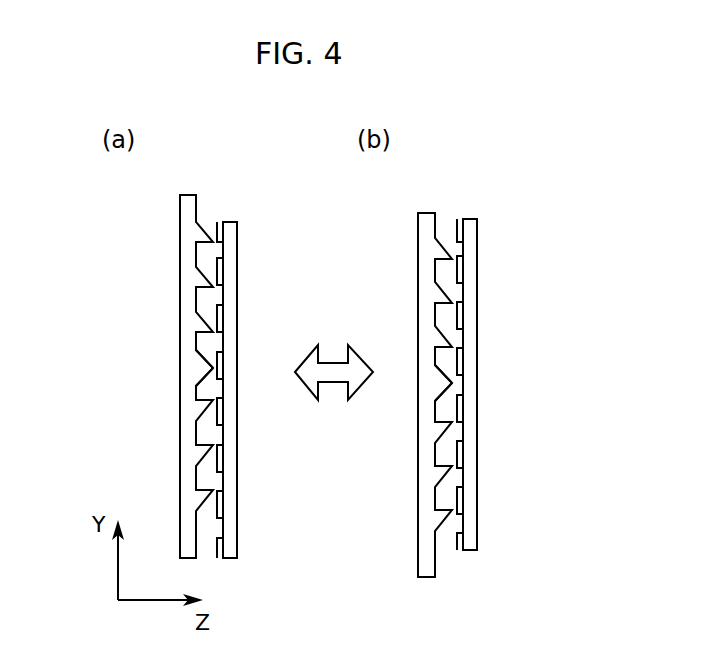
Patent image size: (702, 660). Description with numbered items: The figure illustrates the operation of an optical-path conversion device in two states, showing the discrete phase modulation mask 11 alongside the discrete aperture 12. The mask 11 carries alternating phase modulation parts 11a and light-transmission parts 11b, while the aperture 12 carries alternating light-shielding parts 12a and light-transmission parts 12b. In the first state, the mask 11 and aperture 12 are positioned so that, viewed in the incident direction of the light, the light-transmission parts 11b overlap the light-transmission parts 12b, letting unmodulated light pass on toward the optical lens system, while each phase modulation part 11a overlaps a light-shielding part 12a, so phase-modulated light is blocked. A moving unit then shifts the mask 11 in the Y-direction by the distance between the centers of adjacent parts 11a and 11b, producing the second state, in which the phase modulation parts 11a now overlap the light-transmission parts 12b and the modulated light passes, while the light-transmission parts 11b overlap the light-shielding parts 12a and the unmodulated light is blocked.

The discrete phase modulation mask 11 is at (187, 194).
The phase modulation parts 11a is at (212, 367).
The light-transmission parts 11b is at (198, 387).
The discrete aperture 12 is at (230, 221).
The light-shielding parts 12a is at (216, 367).
The light-transmission parts 12b is at (225, 339).